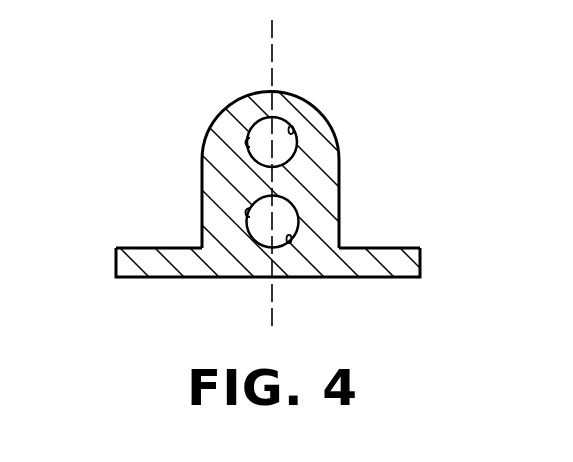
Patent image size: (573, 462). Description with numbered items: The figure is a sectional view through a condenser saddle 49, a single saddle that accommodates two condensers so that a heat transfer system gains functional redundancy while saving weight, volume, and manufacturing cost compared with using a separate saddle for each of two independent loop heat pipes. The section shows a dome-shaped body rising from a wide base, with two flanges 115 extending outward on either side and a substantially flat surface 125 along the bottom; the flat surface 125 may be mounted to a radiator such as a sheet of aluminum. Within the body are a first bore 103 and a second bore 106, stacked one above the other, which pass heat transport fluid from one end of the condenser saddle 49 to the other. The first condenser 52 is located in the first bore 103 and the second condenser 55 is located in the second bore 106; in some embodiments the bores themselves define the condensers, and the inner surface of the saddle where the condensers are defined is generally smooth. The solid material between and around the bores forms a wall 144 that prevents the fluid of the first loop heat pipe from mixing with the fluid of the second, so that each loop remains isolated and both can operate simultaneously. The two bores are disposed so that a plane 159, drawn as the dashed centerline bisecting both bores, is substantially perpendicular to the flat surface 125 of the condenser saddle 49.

The plane 159 is at (274, 57).
The condenser saddle 49 is at (340, 202).
The flanges 115 is at (140, 246).
The substantially flat surface 125 is at (167, 278).
The wall 144 is at (279, 180).
The first condenser 52 is at (247, 147).
The first bore 103 is at (293, 128).
The second bore 106 is at (248, 213).
The second condenser 55 is at (288, 244).